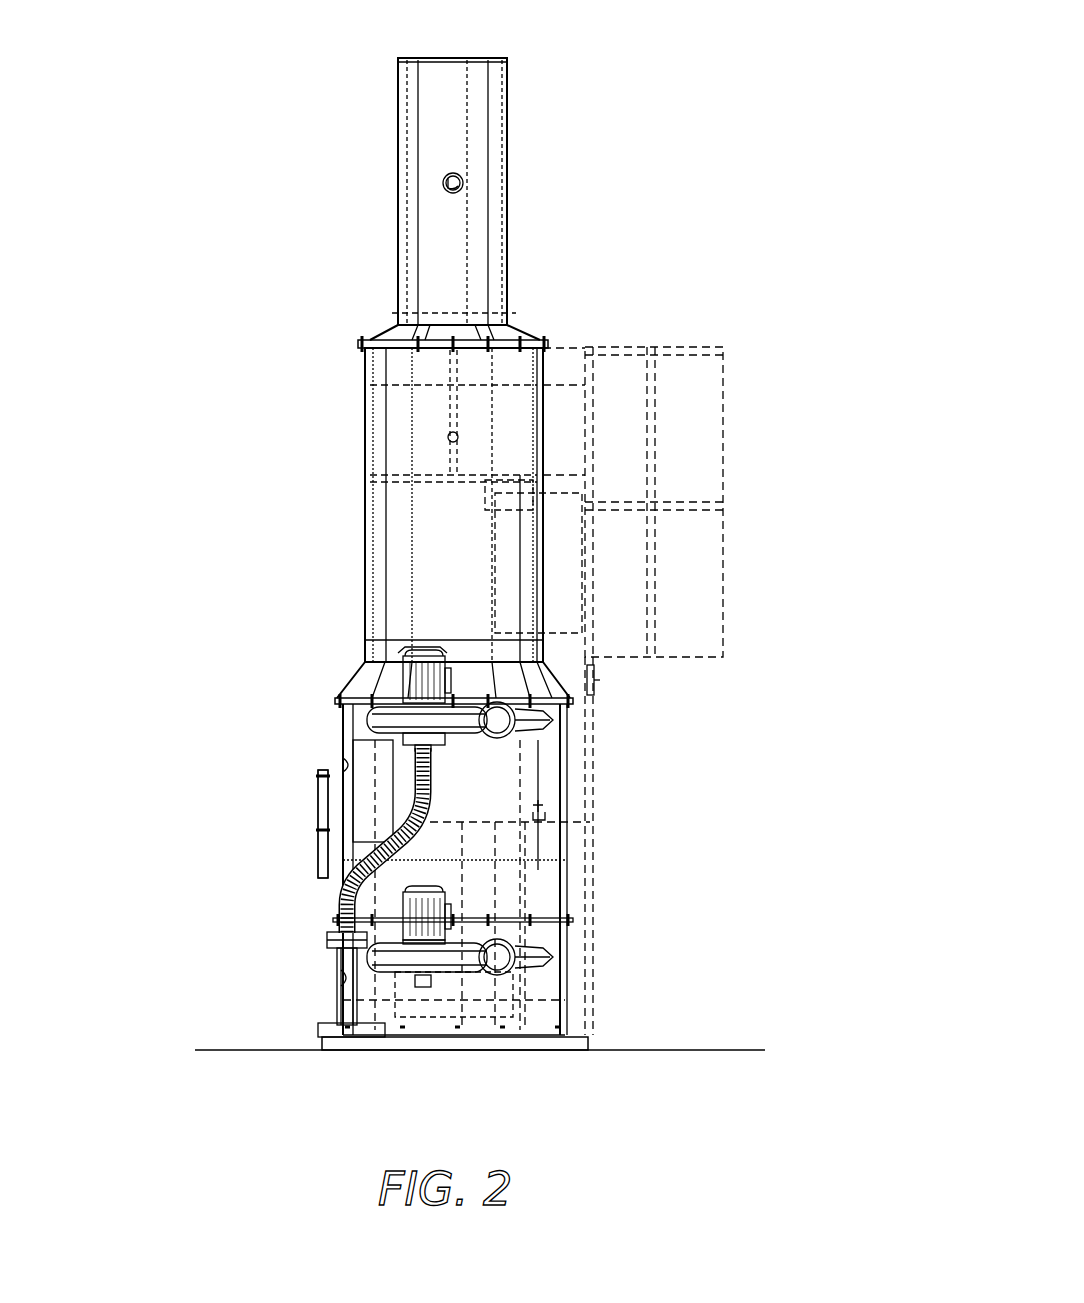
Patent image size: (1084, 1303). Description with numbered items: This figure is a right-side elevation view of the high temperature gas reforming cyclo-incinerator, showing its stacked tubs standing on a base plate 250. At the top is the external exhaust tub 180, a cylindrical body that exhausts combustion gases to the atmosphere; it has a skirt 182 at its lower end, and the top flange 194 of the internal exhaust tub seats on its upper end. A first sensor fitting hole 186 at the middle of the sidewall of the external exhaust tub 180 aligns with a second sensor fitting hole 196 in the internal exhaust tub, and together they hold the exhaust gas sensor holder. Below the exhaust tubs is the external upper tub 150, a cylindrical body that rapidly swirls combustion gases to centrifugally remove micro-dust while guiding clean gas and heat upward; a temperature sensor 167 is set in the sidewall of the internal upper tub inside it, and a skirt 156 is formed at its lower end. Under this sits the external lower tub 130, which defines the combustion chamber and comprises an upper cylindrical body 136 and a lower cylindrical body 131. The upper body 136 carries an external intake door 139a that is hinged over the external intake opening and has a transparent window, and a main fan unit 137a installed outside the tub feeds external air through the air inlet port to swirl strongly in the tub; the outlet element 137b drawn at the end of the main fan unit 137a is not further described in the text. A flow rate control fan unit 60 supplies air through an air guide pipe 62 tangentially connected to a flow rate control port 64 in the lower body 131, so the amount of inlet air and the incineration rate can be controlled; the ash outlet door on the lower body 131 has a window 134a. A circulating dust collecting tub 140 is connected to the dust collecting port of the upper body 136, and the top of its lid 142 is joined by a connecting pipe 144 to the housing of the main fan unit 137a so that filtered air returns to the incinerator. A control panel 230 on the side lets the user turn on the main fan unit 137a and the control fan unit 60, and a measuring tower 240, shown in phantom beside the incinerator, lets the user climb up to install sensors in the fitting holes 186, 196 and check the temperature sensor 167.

The flow rate control fan unit 60 is at (450, 965).
The air guide pipe 62 is at (545, 958).
The flow rate control port 64 is at (548, 965).
The external lower tub 130 is at (673, 790).
The lower cylindrical body 131 is at (560, 937).
The window 134a is at (345, 978).
The upper cylindrical body 136 is at (560, 812).
The main fan unit 137a is at (365, 718).
The upper blower outlet nozzle 137b is at (545, 718).
The external intake door 139a is at (345, 765).
The circulating dust collecting tub 140 is at (352, 815).
The lid 142 is at (328, 940).
The connecting pipe 144 is at (345, 895).
The external upper tub 150 is at (366, 560).
The skirt 156 is at (352, 675).
The temperature sensor 167 is at (455, 445).
The external exhaust tub 180 is at (500, 150).
The skirt 182 is at (520, 325).
The first sensor fitting hole 186 is at (443, 180).
The top flange 194 is at (490, 58).
The second sensor fitting hole 196 is at (462, 190).
The control panel 230 is at (318, 840).
The measuring tower 240 is at (723, 478).
The base plate 250 is at (592, 1045).